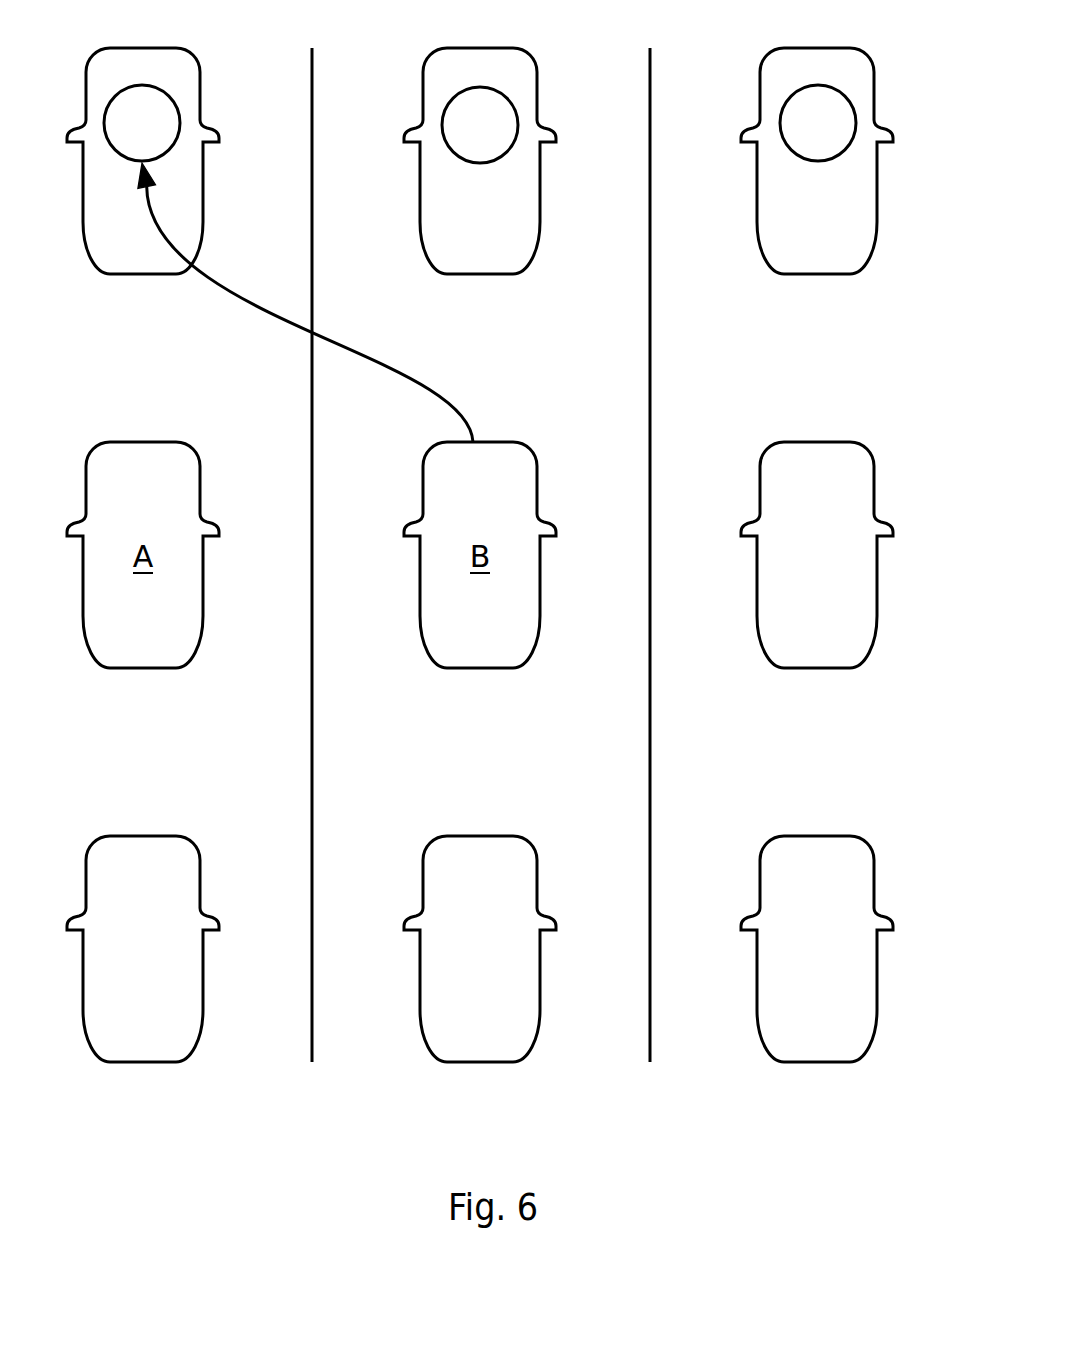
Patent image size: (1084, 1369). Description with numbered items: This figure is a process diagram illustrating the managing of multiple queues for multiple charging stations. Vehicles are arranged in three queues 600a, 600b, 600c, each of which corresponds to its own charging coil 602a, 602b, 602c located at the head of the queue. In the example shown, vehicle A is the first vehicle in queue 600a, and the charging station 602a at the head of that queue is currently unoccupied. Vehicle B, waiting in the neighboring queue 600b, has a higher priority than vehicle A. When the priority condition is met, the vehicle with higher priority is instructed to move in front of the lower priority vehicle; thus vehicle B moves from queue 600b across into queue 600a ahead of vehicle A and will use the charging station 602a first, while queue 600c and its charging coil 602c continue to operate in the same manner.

The queue 600a is at (175, 1097).
The queue 600b is at (499, 1099).
The queue 600c is at (832, 1099).
The charging coil 602a is at (157, 105).
The charging coil 602b is at (499, 105).
The charging coil 602c is at (837, 108).